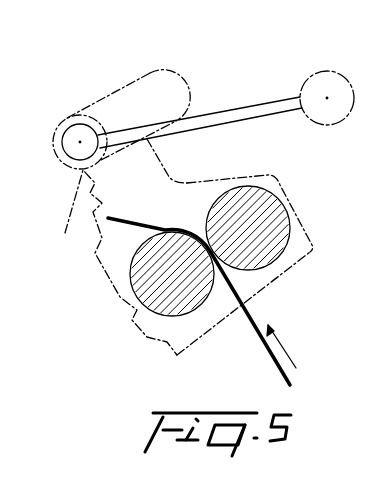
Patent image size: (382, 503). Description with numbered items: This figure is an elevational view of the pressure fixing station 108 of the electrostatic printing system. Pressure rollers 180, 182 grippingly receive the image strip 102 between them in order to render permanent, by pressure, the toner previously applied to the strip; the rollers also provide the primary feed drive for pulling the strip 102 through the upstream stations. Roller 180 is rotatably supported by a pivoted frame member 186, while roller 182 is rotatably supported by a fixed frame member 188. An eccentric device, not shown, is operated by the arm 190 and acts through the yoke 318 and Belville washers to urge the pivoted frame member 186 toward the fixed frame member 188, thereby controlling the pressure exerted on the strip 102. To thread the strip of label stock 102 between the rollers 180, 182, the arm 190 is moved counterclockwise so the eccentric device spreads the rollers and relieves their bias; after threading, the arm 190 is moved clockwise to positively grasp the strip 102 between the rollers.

The yoke 318 is at (108, 97).
The arm 190 is at (218, 112).
The pivoted frame member 186 is at (185, 165).
The pressure roller 180 is at (270, 210).
The fixed frame member 188 is at (112, 262).
The pressure roller 182 is at (147, 297).
The image strip 102 is at (258, 330).
The pressure fixing station 108 is at (289, 284).